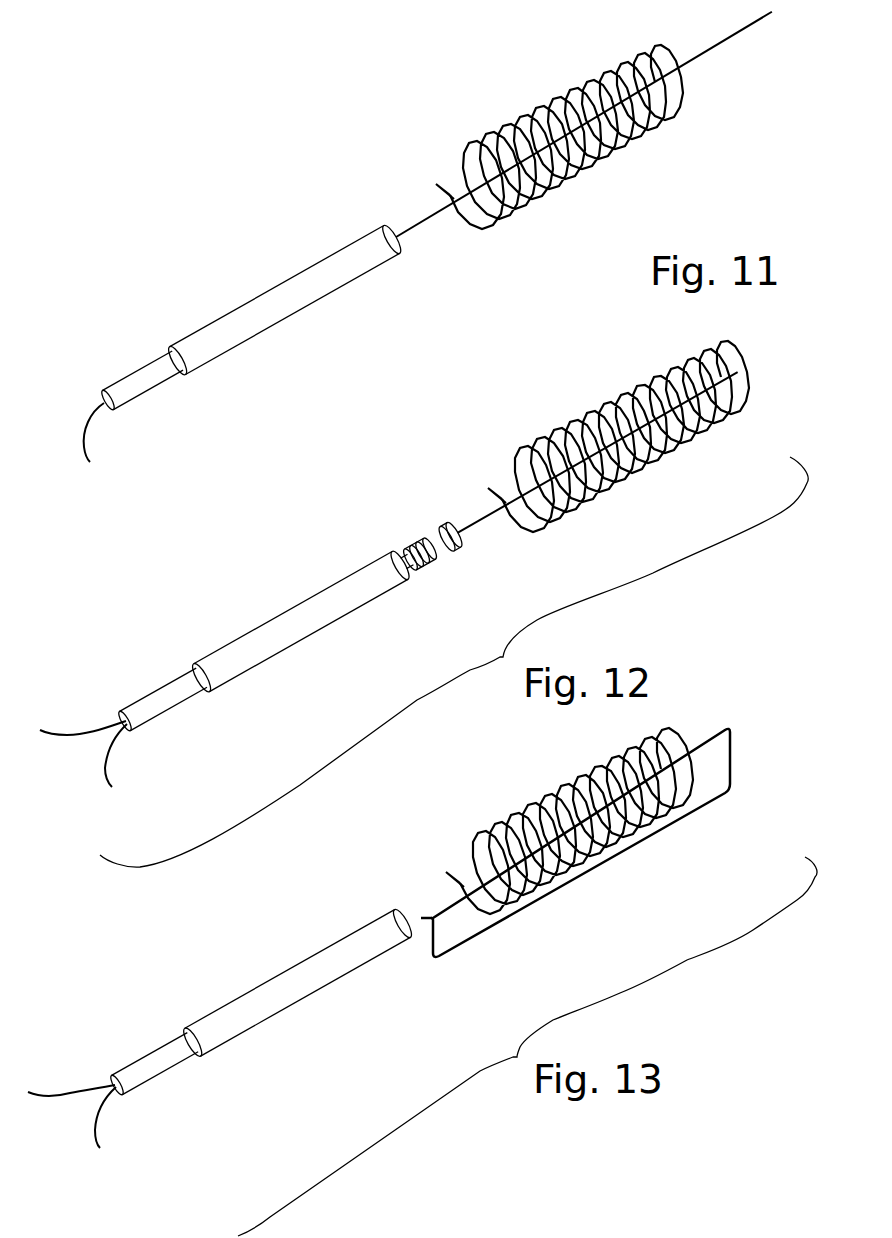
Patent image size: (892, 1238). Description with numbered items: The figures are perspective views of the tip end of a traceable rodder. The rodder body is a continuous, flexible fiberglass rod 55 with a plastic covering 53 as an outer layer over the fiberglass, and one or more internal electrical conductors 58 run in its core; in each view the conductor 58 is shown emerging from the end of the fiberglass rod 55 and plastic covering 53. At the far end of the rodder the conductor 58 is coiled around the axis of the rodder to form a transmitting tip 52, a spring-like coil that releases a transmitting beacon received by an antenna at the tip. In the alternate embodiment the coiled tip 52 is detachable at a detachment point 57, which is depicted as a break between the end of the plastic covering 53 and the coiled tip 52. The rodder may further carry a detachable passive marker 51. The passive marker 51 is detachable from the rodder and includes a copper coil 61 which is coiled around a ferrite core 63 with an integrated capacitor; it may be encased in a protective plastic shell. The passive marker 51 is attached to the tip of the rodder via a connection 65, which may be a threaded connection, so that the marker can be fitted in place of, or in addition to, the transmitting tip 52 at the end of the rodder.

In FIG. 13, the detachable passive marker 51 is at (579, 803).
In FIG. 11, the transmitting tip 52 is at (630, 143).
In FIG. 12, the transmitting tip 52 is at (623, 388).
In FIG. 11, the plastic covering 53 is at (305, 288).
In FIG. 12, the plastic covering 53 is at (325, 610).
In FIG. 13, the plastic covering 53 is at (315, 973).
In FIG. 11, the fiberglass rod 55 is at (152, 377).
In FIG. 12, the fiberglass rod 55 is at (172, 698).
In FIG. 13, the fiberglass rod 55 is at (162, 1063).
In FIG. 12, the detachment point 57 is at (443, 513).
In FIG. 11, the electrical conductor 58 is at (92, 450).
In FIG. 12, the electrical conductor 58 is at (67, 727).
In FIG. 13, the electrical conductor 58 is at (58, 1087).
In FIG. 13, the copper coil 61 is at (727, 793).
In FIG. 13, the ferrite core 63 is at (590, 853).
In FIG. 13, the connection 65 is at (425, 913).